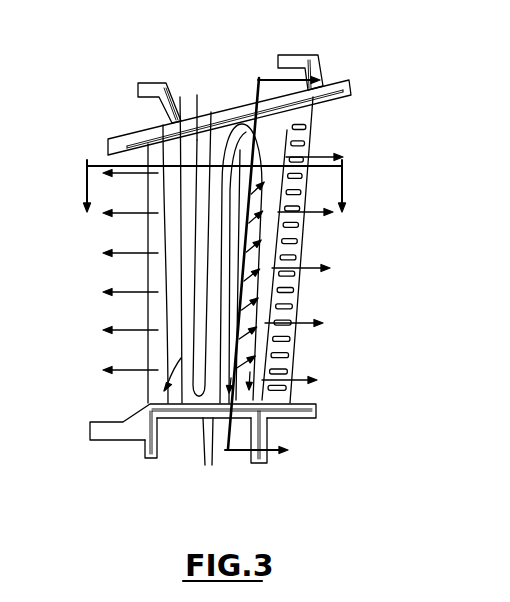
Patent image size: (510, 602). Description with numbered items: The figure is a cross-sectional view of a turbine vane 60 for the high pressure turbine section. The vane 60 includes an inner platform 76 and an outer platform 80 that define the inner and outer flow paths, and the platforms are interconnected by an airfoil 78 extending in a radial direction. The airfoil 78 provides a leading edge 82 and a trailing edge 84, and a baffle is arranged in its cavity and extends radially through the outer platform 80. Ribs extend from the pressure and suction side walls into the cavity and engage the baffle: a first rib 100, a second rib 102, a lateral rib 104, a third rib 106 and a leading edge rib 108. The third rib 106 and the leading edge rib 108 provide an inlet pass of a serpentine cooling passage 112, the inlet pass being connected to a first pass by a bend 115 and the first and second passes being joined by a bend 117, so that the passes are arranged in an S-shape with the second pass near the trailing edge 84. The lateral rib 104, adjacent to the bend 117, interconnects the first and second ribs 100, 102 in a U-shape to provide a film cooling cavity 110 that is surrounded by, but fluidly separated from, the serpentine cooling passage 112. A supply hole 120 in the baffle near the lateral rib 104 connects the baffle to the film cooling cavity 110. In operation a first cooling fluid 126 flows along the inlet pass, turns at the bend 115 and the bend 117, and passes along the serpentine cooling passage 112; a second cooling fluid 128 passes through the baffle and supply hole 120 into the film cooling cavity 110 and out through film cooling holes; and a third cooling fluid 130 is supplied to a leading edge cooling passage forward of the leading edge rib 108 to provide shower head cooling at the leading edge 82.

The vane 60 is at (408, 68).
The inner platform 76 is at (133, 440).
The airfoil 78 is at (141, 268).
The outer platform 80 is at (350, 82).
The leading edge 82 is at (148, 362).
The trailing edge 84 is at (318, 109).
The first rib 100 is at (222, 418).
The second rib 102 is at (250, 398).
The lateral rib 104 is at (247, 128).
The third rib 106 is at (176, 418).
The leading edge rib 108 is at (160, 386).
The film cooling cavity 110 is at (290, 289).
The serpentine cooling passage 112 is at (176, 219).
The bend 115 is at (187, 418).
The bend 117 is at (311, 143).
The supply hole 120 is at (238, 120).
The first cooling fluid 126 is at (193, 104).
The second cooling fluid 128 is at (246, 77).
The third cooling fluid 130 is at (160, 126).